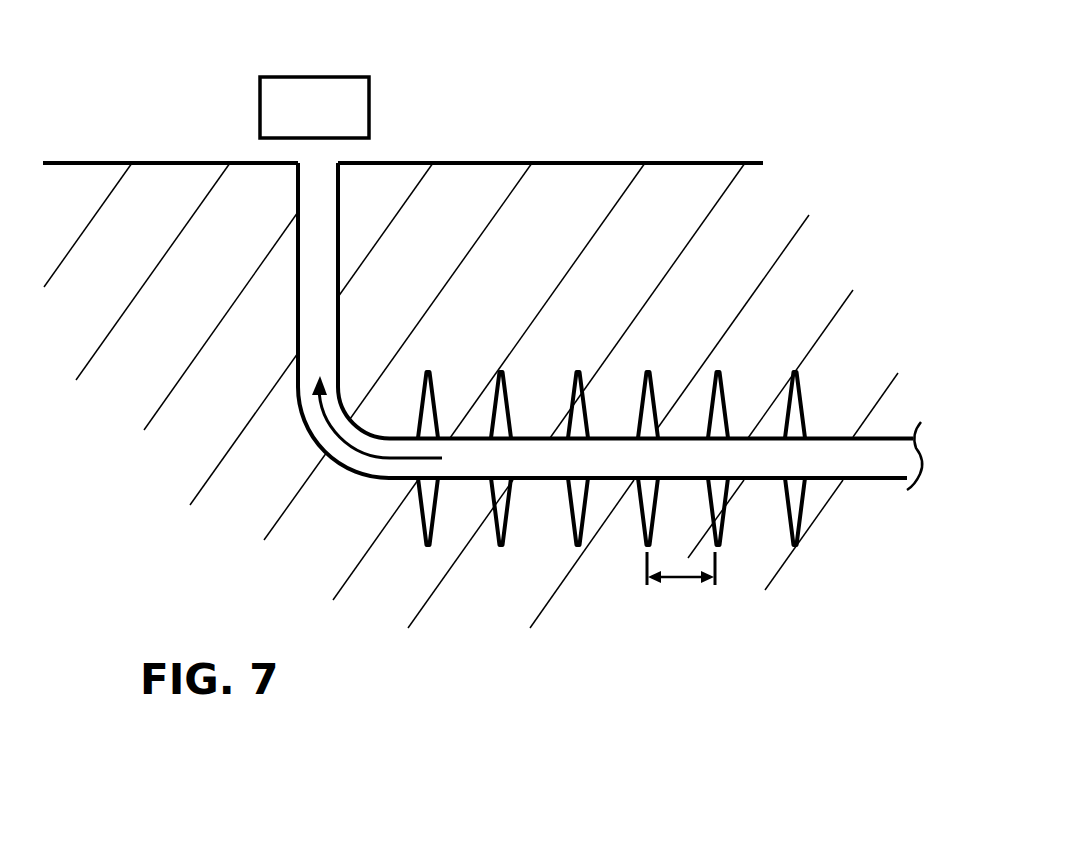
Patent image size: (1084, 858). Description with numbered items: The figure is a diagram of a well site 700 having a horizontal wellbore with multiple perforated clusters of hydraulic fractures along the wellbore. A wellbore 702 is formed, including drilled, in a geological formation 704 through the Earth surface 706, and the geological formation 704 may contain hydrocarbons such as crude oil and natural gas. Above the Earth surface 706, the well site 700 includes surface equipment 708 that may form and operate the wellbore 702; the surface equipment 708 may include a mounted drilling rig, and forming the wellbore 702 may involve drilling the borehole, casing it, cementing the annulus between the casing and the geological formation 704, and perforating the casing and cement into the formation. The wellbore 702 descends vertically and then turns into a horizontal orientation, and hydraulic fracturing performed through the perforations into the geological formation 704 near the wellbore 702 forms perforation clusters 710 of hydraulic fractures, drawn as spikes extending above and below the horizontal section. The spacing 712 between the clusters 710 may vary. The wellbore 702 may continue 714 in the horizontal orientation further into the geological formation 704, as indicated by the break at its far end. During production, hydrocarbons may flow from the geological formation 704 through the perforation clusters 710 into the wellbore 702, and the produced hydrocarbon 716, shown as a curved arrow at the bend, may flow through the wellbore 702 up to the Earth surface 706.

The well site 700 is at (232, 641).
The wellbore 702 is at (312, 262).
The geological formation 704 is at (660, 267).
The Earth surface 706 is at (563, 162).
The surface equipment 708 is at (328, 90).
The perforation clusters 710 is at (578, 387).
The spacing 712 is at (668, 578).
The continuation of the wellbore 714 is at (865, 463).
The produced hydrocarbon 716 is at (325, 403).